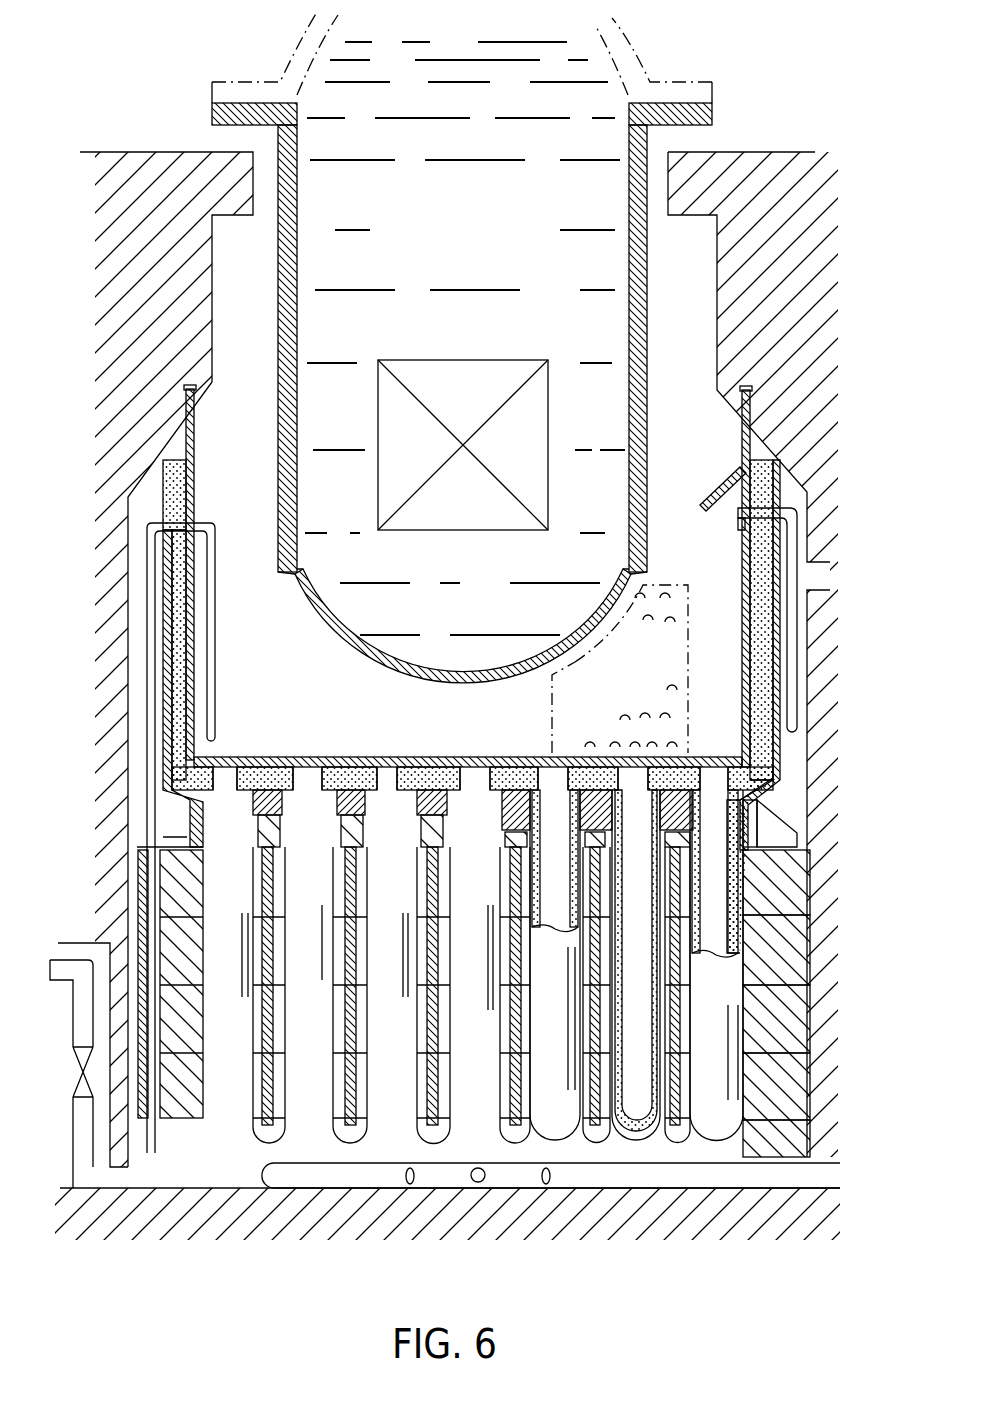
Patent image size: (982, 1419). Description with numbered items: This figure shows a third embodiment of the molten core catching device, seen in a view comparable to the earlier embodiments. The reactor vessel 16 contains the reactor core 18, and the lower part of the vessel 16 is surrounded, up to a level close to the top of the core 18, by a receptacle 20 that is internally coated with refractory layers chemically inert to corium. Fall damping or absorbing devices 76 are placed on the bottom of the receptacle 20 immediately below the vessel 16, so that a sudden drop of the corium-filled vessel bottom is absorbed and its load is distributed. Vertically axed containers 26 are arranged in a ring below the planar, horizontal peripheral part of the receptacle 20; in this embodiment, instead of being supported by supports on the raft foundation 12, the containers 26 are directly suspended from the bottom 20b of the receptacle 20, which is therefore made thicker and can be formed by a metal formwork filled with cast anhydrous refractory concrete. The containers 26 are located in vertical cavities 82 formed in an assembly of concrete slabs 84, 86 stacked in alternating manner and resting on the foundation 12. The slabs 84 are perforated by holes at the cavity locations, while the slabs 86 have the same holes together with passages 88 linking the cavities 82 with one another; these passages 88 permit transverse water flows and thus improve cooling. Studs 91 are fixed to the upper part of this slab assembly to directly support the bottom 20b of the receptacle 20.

The raft foundation 12 is at (736, 1273).
The vessel 16 is at (648, 347).
The reactor core 18 is at (471, 368).
The receptacle 20 is at (162, 497).
The bottom of the receptacle 20b is at (352, 758).
The containers 26 is at (282, 950).
The fall damping or absorbing devices 76 is at (548, 725).
The vertical cavities 82 is at (222, 1140).
The concrete slabs 84 is at (777, 880).
The concrete slabs 86 is at (770, 963).
The passages 88 is at (338, 1143).
The studs 91 is at (415, 833).